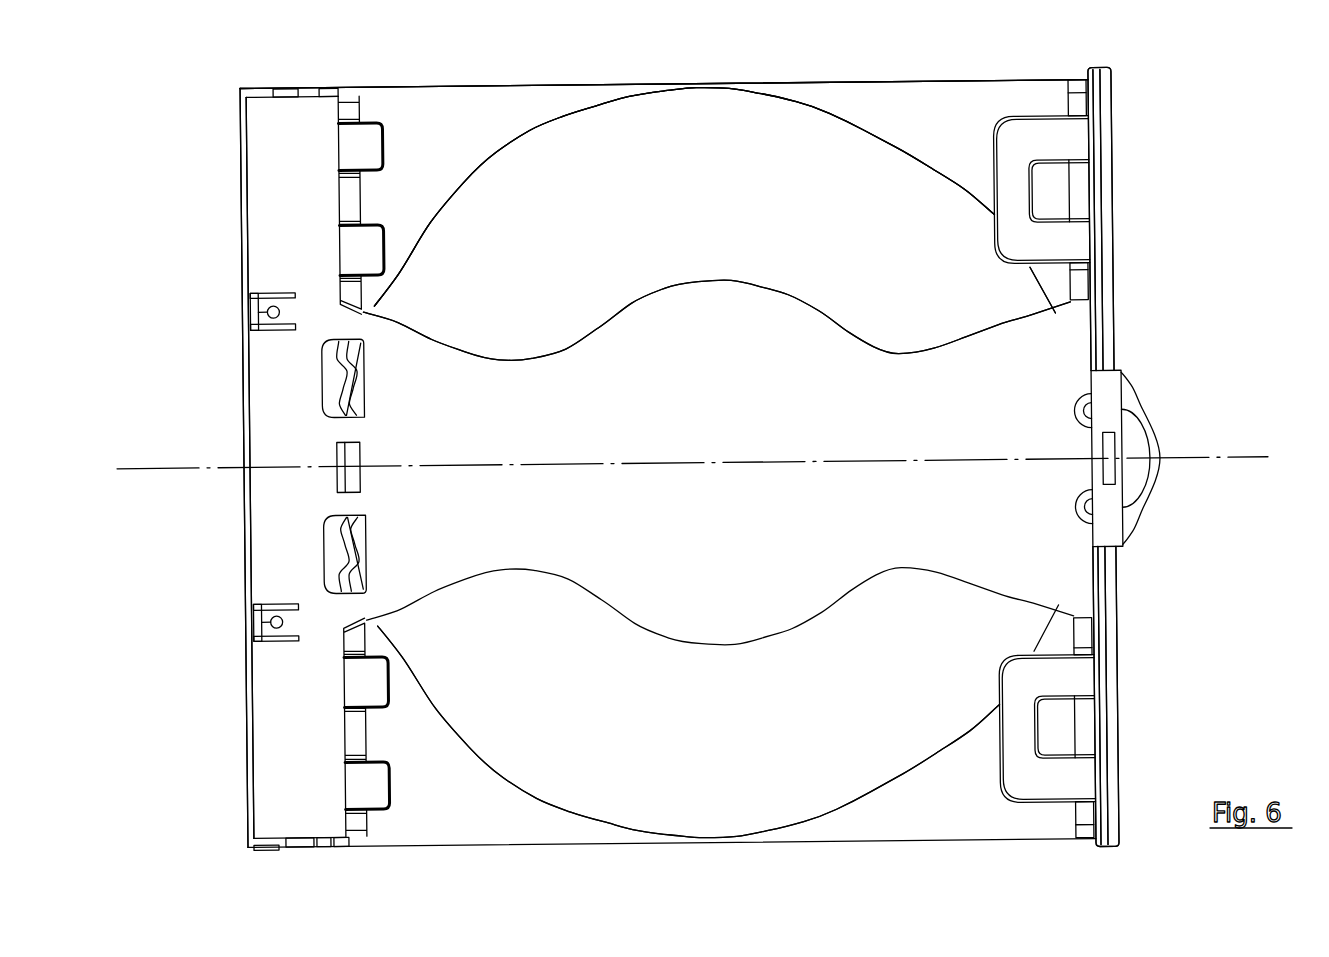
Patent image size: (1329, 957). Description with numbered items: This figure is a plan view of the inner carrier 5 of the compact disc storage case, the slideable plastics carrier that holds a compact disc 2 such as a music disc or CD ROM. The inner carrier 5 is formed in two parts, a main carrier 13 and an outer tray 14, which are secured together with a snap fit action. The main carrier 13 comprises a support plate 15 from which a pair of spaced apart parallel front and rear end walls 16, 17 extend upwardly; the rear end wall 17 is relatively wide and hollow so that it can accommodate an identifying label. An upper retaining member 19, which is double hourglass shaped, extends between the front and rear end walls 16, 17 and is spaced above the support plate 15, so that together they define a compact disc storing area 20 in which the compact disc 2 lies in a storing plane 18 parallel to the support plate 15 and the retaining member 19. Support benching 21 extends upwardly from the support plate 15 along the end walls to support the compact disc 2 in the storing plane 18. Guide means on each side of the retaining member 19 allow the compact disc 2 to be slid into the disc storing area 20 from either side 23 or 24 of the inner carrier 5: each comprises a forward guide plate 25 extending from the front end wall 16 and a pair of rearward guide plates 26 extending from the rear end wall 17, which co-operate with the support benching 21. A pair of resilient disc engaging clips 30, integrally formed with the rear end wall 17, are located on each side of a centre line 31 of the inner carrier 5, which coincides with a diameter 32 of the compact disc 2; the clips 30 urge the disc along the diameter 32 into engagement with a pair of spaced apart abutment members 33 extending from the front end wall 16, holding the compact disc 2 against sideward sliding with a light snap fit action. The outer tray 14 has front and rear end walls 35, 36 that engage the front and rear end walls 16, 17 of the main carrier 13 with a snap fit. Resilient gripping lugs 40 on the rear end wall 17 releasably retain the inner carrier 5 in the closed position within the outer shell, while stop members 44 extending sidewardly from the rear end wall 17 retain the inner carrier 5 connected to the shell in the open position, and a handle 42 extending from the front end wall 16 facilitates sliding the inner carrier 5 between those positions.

The compact disc 2 is at (565, 118).
The inner carrier 5 is at (997, 96).
The main carrier 13 is at (461, 116).
The outer tray 14 is at (1118, 92).
The support plate 15 is at (862, 95).
The front end wall 16 is at (1100, 212).
The rear end wall 17 is at (288, 138).
The storing plane 18 is at (818, 100).
The upper retaining member 19 is at (752, 306).
The compact disc storing area 20 is at (525, 800).
The support benching 21 is at (356, 642).
The side 23 is at (931, 92).
The side 24 is at (903, 846).
The forward guide plate 25 is at (1040, 142).
The rearward guide plates 26 is at (376, 136).
The resilient disc engaging clips 30 is at (340, 383).
The centre line 31 is at (200, 463).
The diameter 32 is at (490, 462).
The abutment members 33 is at (1078, 418).
The front end wall 35 is at (1110, 582).
The rear end wall 36 is at (247, 528).
The resilient gripping lugs 40 is at (262, 309).
The handle 42 is at (1153, 437).
The stop members 44 is at (350, 82).